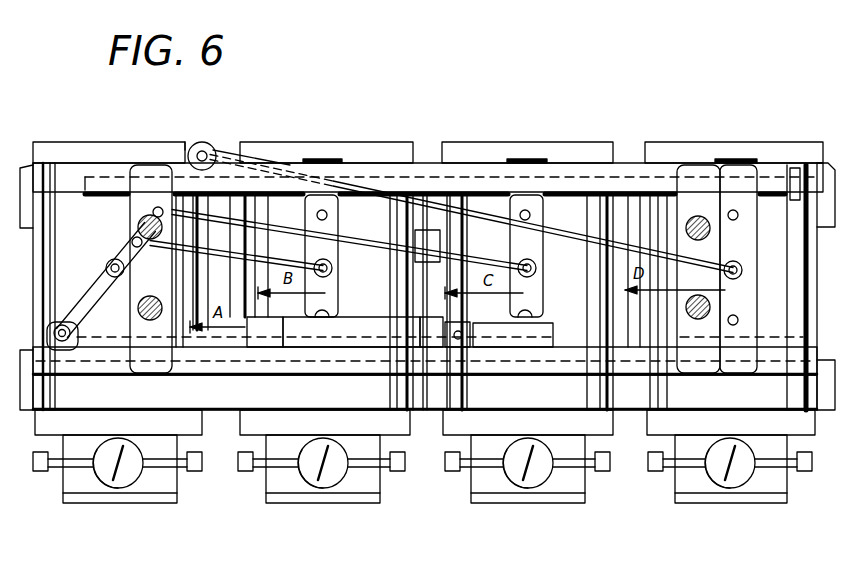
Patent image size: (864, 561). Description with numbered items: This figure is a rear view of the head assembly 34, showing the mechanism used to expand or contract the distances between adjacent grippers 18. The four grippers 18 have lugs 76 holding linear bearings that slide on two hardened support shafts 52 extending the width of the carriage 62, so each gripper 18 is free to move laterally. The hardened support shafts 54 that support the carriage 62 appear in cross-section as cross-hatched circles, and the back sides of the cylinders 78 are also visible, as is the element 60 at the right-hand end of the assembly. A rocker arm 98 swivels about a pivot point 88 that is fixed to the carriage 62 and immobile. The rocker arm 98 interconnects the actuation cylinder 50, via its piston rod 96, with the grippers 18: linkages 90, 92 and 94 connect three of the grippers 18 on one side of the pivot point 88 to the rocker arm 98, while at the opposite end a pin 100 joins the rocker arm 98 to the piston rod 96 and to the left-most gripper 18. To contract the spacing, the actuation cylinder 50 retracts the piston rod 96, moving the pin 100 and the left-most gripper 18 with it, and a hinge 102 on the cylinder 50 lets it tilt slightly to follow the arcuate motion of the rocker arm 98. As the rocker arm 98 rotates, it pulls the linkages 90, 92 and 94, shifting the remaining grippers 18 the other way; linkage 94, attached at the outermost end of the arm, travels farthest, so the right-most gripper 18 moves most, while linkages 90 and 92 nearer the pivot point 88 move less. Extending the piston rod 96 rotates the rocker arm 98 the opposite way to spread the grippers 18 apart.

The gripper 18 is at (50, 142).
The head assembly 34 is at (421, 138).
The actuation cylinder 50 is at (357, 322).
The hardened support shaft 52 is at (623, 203).
The hardened support shaft 54 is at (137, 203).
The end cap 60 is at (818, 167).
The carriage 62 is at (89, 142).
The lug 76 is at (340, 200).
The cylinder 78 is at (117, 488).
The pivot point 88 is at (122, 255).
The linkage 90 is at (268, 256).
The linkage 92 is at (293, 226).
The linkage 94 is at (483, 203).
The piston rod 96 is at (203, 345).
The rocker arm 98 is at (88, 287).
The pin 100 is at (72, 350).
The hinge 102 is at (458, 340).